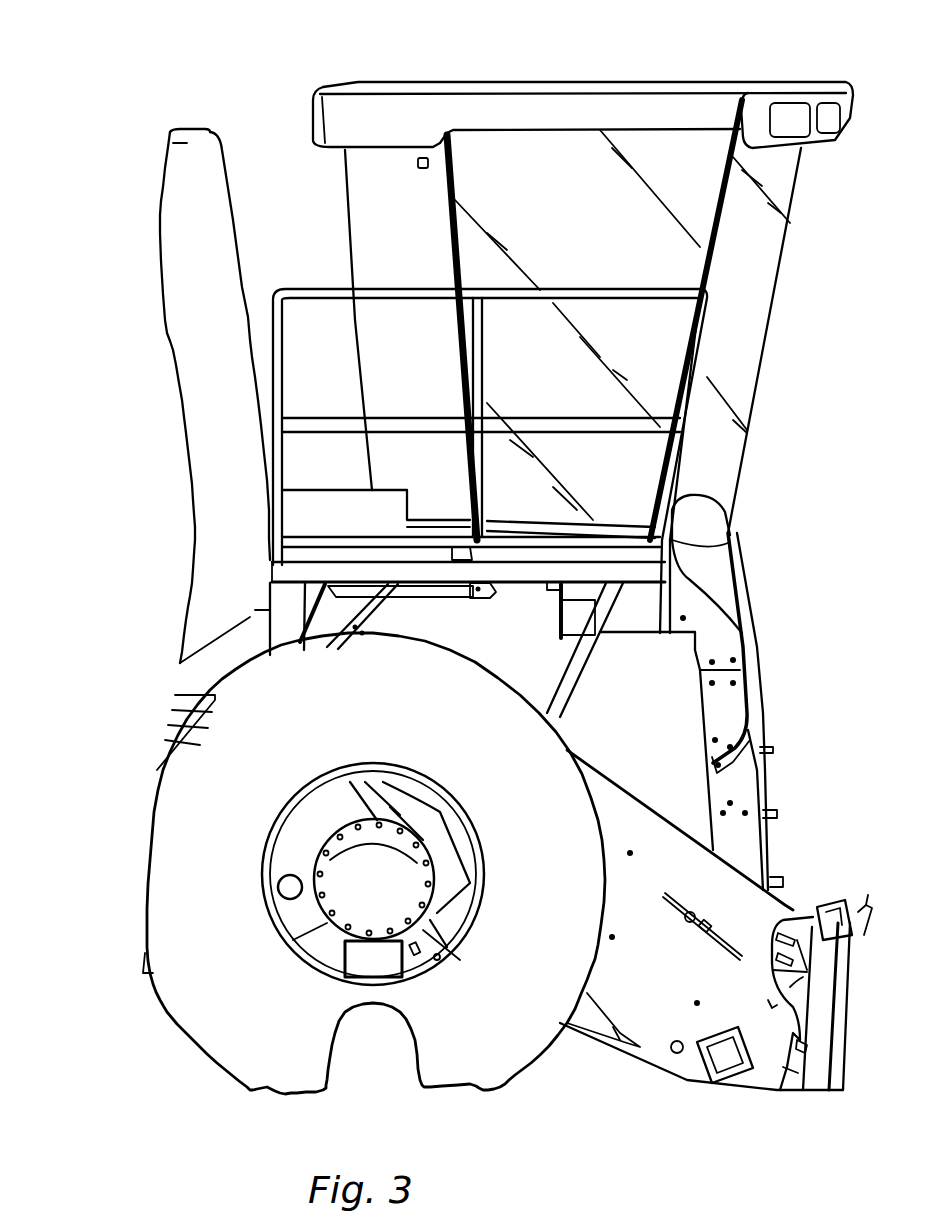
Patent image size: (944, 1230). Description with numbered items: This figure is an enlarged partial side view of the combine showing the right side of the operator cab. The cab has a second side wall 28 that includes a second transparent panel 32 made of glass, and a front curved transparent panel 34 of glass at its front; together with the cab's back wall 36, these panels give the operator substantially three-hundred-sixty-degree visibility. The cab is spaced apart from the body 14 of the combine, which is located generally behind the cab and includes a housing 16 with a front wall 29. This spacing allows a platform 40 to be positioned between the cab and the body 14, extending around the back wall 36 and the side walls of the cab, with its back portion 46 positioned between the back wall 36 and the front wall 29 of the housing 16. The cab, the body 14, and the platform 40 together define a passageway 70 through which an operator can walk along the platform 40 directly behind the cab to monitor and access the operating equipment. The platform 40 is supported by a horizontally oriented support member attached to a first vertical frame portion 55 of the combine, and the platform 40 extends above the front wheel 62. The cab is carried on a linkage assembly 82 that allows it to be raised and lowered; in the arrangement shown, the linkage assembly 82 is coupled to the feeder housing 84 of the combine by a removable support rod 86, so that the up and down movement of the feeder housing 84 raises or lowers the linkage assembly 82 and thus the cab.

The body 14 is at (129, 182).
The housing 16 is at (187, 333).
The second side wall 28 is at (378, 194).
The front wall 29 is at (230, 190).
The second transparent panel 32 is at (530, 167).
The front curved transparent panel 34 is at (757, 273).
The back wall 36 is at (350, 242).
The platform 40 is at (321, 409).
The back portion 46 is at (300, 465).
The first vertical frame portion 55 is at (297, 608).
The front wheel 62 is at (217, 1008).
The passageway 70 is at (275, 230).
The linkage assembly 82 is at (633, 600).
The feeder housing 84 is at (620, 780).
The removable support rod 86 is at (577, 677).